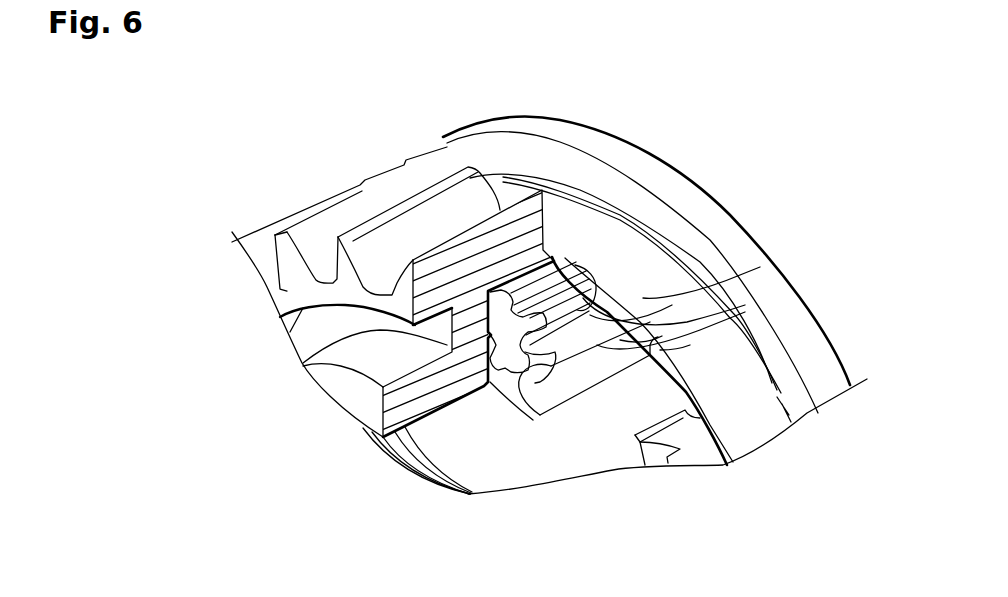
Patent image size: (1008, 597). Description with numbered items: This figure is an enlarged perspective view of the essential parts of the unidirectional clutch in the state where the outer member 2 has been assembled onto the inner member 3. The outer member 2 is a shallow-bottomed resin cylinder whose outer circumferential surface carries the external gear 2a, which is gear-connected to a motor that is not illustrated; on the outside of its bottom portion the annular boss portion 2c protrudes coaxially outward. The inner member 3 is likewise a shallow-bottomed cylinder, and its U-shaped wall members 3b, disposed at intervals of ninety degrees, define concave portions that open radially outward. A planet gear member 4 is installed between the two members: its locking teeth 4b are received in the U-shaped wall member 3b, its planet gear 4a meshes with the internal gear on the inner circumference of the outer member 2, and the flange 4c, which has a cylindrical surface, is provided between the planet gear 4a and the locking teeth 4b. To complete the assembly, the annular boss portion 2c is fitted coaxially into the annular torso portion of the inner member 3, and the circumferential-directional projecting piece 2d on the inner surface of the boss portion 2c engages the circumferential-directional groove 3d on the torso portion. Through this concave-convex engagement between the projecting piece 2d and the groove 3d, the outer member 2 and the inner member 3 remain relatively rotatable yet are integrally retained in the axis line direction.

The outer member 2 is at (324, 195).
The external gear 2a is at (450, 178).
The annular boss portion 2c is at (333, 352).
The circumferential-directional projecting piece 2d is at (400, 433).
The inner member 3 is at (625, 128).
The U-shaped wall member 3b is at (511, 410).
The circumferential-directional groove 3d is at (450, 460).
The planet gear member 4 is at (783, 182).
The planet gear 4a is at (690, 345).
The locking teeth 4b is at (672, 305).
The flange 4c is at (662, 336).